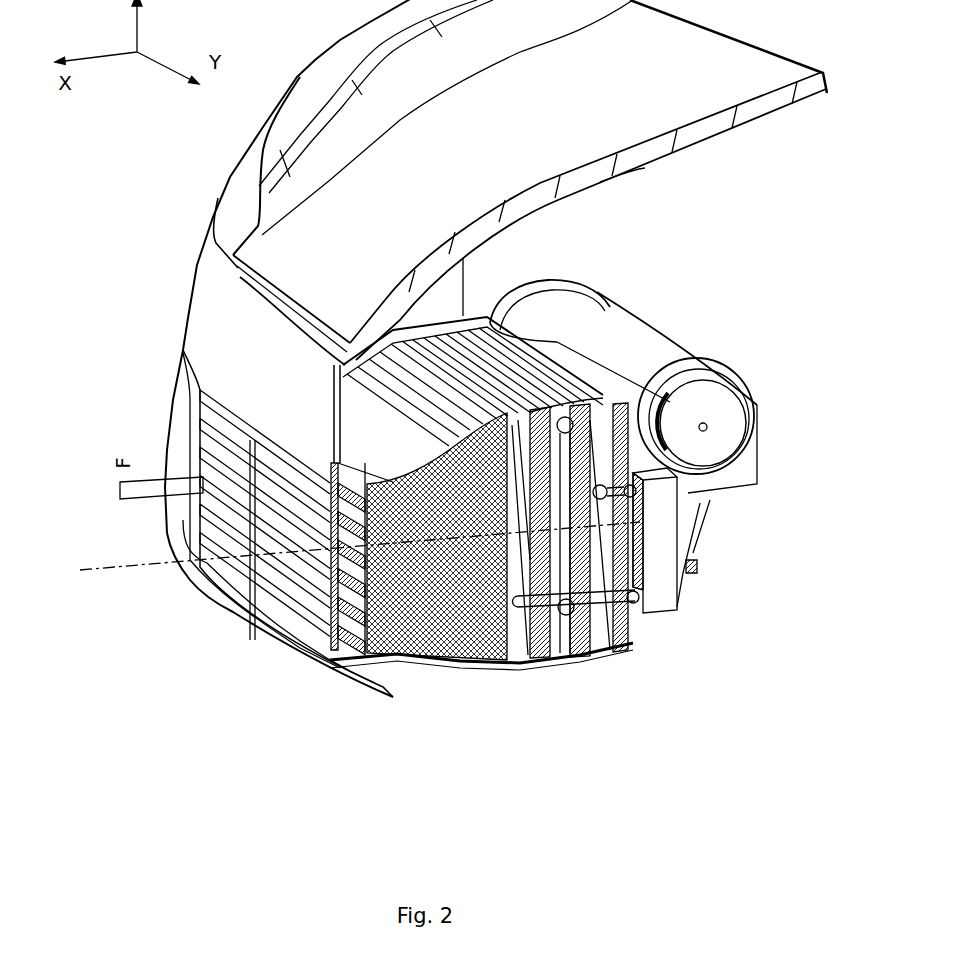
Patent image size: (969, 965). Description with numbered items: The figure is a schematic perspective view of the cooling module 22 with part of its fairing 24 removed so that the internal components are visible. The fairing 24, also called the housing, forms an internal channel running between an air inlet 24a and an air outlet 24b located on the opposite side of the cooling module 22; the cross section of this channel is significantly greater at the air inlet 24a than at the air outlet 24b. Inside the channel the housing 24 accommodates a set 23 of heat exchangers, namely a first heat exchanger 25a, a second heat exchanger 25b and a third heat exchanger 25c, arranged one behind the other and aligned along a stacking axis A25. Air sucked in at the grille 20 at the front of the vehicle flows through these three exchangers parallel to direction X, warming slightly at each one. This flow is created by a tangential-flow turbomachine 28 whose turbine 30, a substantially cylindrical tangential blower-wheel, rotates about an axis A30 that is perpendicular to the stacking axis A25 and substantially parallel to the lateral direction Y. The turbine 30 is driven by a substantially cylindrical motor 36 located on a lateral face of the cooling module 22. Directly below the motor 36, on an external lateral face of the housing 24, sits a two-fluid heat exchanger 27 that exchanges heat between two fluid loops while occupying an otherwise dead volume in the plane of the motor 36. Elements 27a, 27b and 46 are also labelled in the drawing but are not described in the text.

The grille 20 is at (247, 598).
The cooling module 22 is at (735, 621).
The set of heat exchangers 23 is at (443, 770).
The fairing 24 is at (600, 303).
The air inlet 24a is at (153, 422).
The air outlet 24b is at (758, 510).
The first heat exchanger 25a is at (594, 665).
The second heat exchanger 25b is at (558, 672).
The third heat exchanger 25c is at (523, 665).
The two-fluid heat exchanger 27 is at (677, 580).
The upper fastening rod 27a is at (690, 493).
The lower fastening rod 27b is at (667, 612).
The tangential-flow turbomachine 28 is at (652, 306).
The turbine 30 is at (690, 350).
The motor 36 is at (737, 387).
The mounting bracket 46 is at (753, 506).
The stacking axis A25 is at (360, 546).
The axis of rotation A30 is at (707, 429).